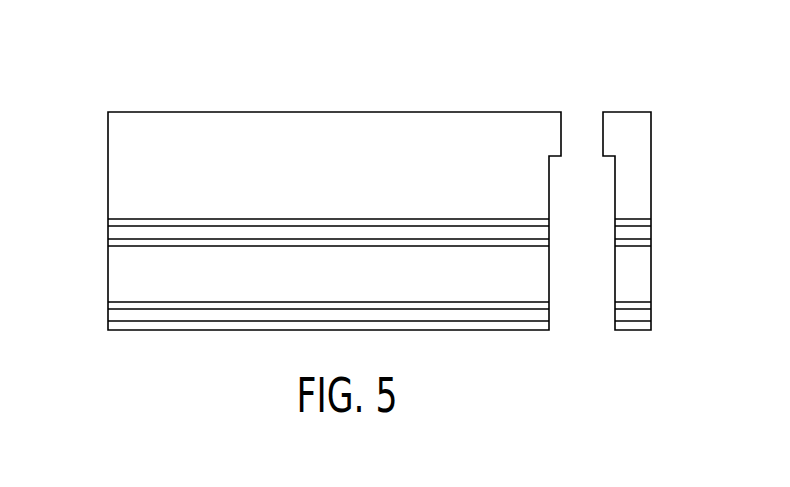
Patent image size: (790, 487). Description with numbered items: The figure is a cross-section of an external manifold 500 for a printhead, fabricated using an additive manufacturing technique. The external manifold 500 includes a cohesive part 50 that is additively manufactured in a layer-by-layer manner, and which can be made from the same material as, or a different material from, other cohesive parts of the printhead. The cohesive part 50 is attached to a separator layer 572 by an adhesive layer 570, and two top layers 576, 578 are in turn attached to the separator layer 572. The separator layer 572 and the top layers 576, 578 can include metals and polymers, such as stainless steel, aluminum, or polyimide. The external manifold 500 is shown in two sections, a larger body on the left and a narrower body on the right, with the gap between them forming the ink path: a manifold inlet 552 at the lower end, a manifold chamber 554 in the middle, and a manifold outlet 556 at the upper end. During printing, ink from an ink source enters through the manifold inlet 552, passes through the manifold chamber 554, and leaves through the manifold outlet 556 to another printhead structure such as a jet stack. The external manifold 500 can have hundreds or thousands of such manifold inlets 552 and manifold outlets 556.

The external manifold 500 is at (254, 95).
The cohesive part 50 is at (115, 167).
The adhesive layer 570 is at (112, 226).
The separator layer 572 is at (112, 236).
The top layer 576 is at (115, 293).
The top layer 578 is at (115, 322).
The manifold inlet 552 is at (580, 318).
The manifold chamber 554 is at (594, 232).
The manifold outlet 556 is at (582, 107).